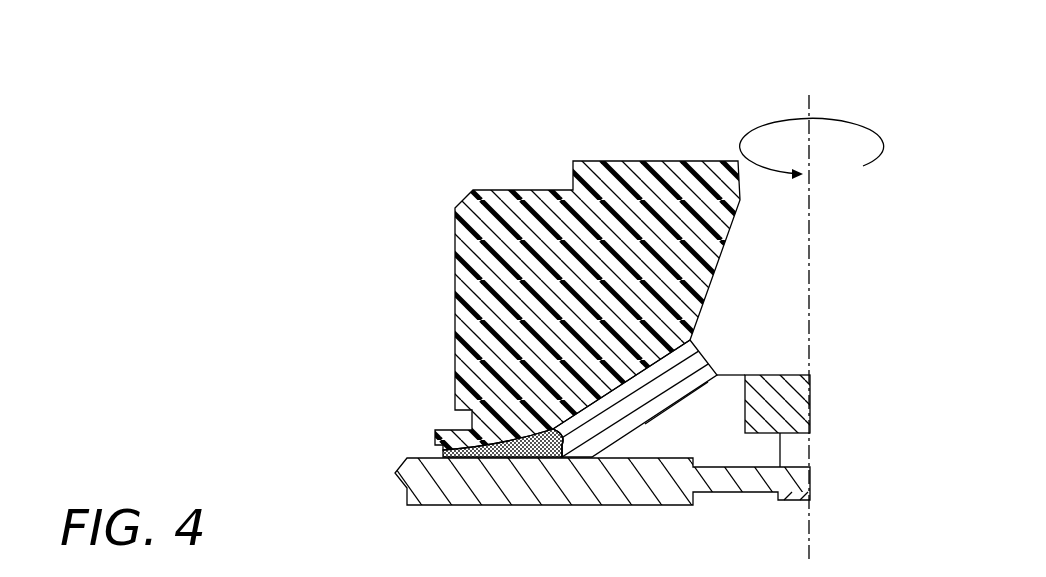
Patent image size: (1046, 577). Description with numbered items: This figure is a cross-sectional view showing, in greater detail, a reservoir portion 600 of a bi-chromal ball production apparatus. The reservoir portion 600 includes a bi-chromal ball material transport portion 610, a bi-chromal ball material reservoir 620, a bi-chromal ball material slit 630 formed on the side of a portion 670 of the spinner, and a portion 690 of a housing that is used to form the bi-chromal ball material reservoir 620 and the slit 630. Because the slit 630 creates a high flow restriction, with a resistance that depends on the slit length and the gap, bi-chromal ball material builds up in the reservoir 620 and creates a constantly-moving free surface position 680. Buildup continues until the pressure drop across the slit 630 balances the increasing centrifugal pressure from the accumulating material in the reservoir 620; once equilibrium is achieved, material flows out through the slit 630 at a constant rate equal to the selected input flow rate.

The reservoir portion 600 is at (440, 141).
The bi-chromal ball material transport portion 610 is at (677, 377).
The bi-chromal ball material reservoir 620 is at (527, 460).
The bi-chromal ball material slit 630 is at (443, 457).
The portion of the spinner 670 is at (448, 492).
The free surface position 680 is at (565, 457).
The portion of a housing 690 is at (497, 318).